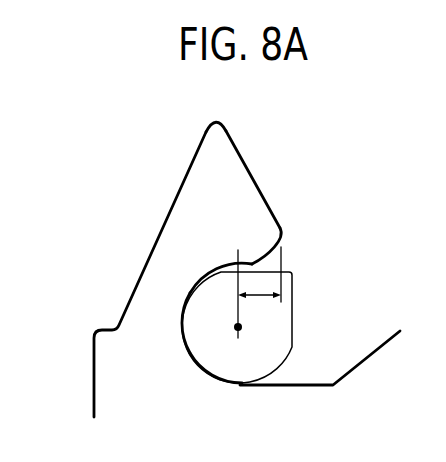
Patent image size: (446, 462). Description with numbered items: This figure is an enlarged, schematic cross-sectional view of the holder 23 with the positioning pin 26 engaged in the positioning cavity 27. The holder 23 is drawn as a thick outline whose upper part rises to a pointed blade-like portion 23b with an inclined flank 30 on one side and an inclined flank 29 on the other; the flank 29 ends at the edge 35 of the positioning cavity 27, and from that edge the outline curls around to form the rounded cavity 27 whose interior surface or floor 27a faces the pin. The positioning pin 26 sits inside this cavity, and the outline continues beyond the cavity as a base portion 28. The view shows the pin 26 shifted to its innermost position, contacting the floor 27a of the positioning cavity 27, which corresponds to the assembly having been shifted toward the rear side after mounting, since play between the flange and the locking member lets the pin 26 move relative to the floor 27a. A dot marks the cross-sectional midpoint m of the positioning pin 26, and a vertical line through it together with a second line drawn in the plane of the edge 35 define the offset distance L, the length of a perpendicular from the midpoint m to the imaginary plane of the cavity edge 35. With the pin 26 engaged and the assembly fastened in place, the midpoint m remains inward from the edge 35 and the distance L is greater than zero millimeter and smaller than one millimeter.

The holder 23 is at (90, 208).
The blade portion 23b is at (205, 173).
The inclined surface 30 is at (172, 205).
The inclined surface 29 is at (245, 152).
The edge of the positioning cavity 35 is at (282, 235).
The positioning cavity 27 is at (199, 355).
The floor of the cavity 27a is at (188, 326).
The positioning pin 26 is at (290, 316).
The support surface 28 is at (377, 342).
The distance L is at (257, 293).
The cross-sectional midpoint m is at (238, 338).